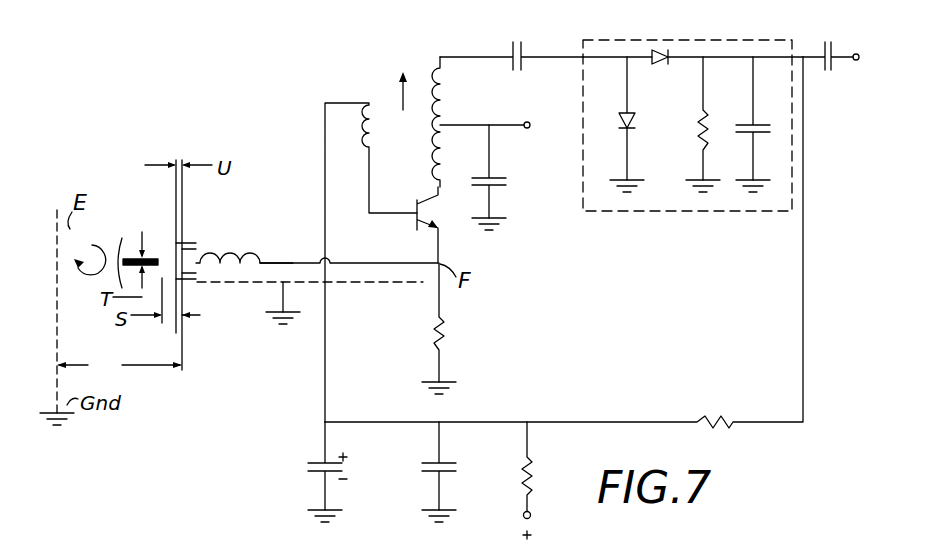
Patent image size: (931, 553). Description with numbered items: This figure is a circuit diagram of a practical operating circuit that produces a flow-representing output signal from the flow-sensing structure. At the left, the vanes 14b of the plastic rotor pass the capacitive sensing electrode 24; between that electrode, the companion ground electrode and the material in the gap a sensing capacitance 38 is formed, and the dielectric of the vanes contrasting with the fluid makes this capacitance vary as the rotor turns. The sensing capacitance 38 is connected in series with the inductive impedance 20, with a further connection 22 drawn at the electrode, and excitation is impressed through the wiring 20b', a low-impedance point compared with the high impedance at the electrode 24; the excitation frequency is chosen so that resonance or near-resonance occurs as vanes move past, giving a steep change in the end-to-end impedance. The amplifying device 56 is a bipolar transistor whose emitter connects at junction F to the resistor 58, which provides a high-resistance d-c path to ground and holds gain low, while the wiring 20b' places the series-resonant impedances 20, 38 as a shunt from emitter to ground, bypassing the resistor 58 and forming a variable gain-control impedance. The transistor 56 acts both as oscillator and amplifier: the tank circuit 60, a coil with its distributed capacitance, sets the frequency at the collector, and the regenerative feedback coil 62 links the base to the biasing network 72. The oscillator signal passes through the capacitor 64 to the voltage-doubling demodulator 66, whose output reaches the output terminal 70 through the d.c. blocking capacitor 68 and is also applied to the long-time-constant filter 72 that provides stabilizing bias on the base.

The vanes 14b is at (152, 256).
The capacitive sensing electrode 24 is at (198, 250).
The inductive impedance 20 is at (228, 253).
The wiring 20b' is at (289, 228).
The shield / ground lead 22 is at (196, 279).
The sensing capacitance 38 is at (119, 370).
The regenerative feedback coil 62 is at (377, 108).
The tank circuit 60 is at (447, 90).
The amplifying device 56 is at (433, 206).
The resistor 58 is at (447, 334).
The capacitor 64 is at (517, 40).
The voltage-doubling demodulator 66 is at (703, 38).
The d.c. blocking capacitor 68 is at (827, 38).
The output terminal 70 is at (854, 62).
The long-time-constant filter 72 is at (472, 448).